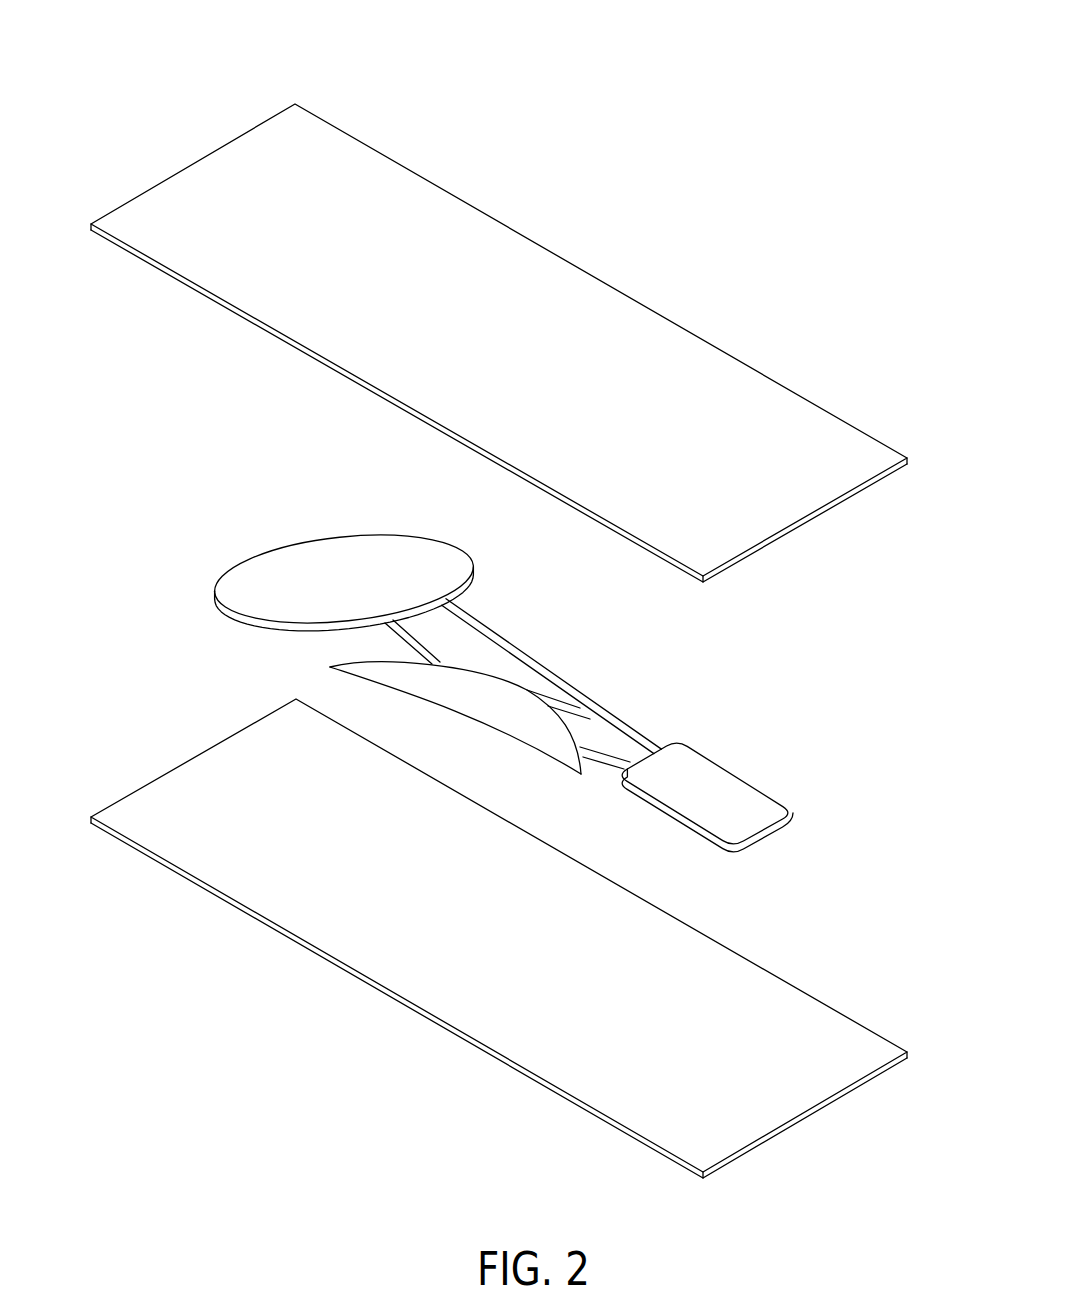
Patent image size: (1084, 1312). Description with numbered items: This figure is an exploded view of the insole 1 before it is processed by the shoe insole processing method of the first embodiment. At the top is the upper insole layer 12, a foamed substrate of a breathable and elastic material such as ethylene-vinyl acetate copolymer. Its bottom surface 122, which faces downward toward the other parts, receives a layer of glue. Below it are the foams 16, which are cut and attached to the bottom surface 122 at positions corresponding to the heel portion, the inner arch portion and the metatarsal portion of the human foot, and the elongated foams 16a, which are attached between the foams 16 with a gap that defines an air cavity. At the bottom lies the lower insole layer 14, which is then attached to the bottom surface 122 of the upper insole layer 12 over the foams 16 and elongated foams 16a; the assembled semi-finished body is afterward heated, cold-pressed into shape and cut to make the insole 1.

The insole 1 is at (720, 86).
The upper insole layer 12 is at (499, 374).
The bottom surface 122 is at (611, 531).
The lower insole layer 14 is at (438, 990).
The foams 16 is at (322, 570).
The elongated foams 16a is at (607, 720).